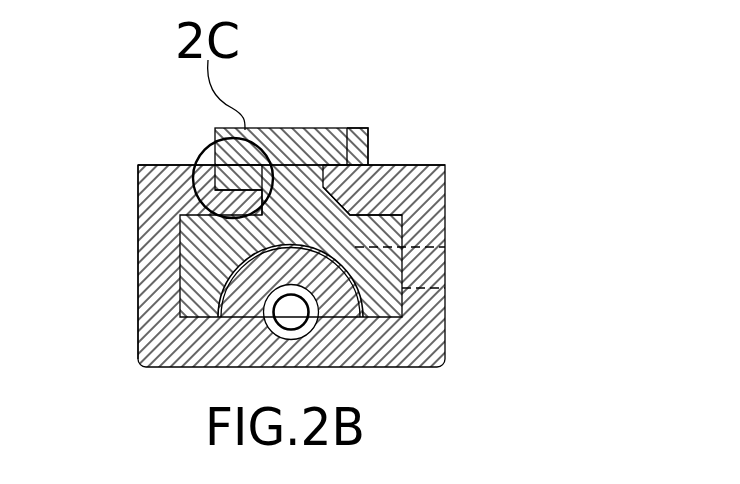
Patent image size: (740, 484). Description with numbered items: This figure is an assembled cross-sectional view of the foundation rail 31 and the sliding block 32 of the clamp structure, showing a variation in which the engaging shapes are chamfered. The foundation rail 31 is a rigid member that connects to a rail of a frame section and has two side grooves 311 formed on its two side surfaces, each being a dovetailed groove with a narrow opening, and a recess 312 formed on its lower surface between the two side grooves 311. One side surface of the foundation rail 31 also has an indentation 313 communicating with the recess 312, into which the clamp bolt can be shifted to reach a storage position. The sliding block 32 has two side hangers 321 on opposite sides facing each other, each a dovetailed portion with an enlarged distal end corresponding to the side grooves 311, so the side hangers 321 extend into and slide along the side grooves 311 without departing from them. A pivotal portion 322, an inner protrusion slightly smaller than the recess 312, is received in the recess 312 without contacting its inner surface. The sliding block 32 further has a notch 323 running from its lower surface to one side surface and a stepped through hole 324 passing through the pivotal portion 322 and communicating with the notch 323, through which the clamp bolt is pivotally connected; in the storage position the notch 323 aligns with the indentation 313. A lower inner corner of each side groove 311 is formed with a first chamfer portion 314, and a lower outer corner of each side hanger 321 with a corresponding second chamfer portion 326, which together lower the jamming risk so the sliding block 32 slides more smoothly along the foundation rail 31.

The foundation rail 31 is at (317, 128).
The side grooves 311 is at (348, 128).
The recess 312 is at (183, 272).
The indentation 313 is at (447, 290).
The first chamfer portion 314 is at (203, 178).
The sliding block 32 is at (427, 353).
The side hangers 321 is at (395, 180).
The pivotal portion 322 is at (137, 328).
The notch 323 is at (447, 268).
The stepped through hole 324 is at (310, 318).
The second chamfer portion 326 is at (198, 182).